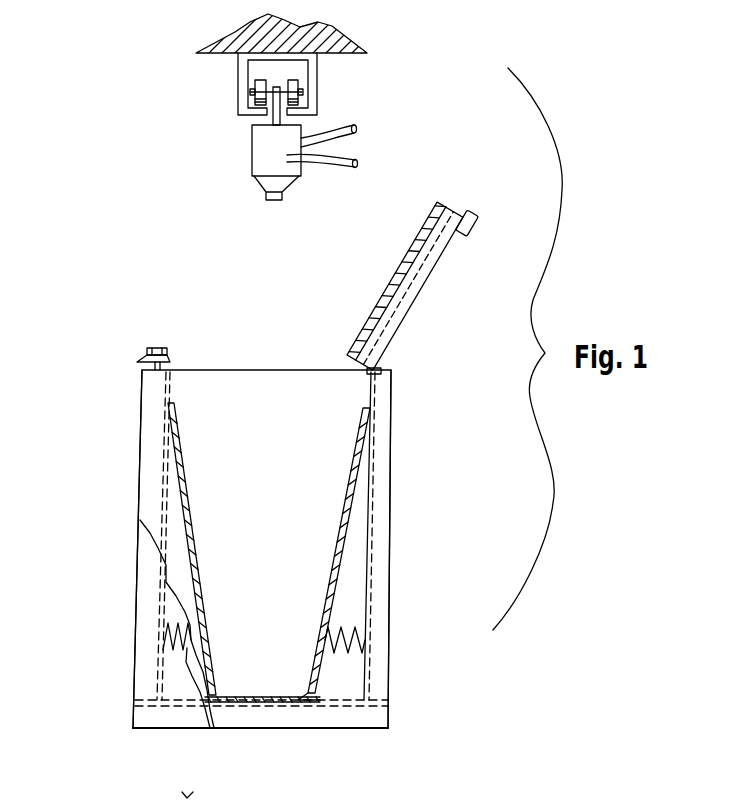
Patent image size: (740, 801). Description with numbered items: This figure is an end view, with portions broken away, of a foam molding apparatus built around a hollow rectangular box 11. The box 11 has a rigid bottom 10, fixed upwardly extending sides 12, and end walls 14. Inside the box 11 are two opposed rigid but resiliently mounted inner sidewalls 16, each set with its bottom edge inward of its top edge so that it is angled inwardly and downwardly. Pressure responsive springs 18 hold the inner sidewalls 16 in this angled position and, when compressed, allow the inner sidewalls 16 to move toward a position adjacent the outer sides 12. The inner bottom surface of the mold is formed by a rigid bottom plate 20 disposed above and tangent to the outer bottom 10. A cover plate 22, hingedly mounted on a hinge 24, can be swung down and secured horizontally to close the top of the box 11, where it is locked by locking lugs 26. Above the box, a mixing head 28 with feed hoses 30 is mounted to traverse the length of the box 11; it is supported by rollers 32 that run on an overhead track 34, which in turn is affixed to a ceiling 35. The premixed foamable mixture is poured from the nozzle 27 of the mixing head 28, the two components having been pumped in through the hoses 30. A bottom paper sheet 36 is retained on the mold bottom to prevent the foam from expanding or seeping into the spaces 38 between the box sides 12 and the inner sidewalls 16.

The rigid bottom 10 is at (272, 723).
The hollow rectangular box 11 is at (446, 491).
The sides 12 is at (142, 670).
The end walls 14 is at (178, 683).
The inner sidewalls 16 is at (196, 572).
The pressure responsive springs 18 is at (190, 623).
The rigid bottom plate 20 is at (225, 703).
The cover plate 22 is at (402, 270).
The hinge 24 is at (385, 372).
The locking lugs 26 is at (140, 355).
The nozzle 27 is at (270, 197).
The mixing head 28 is at (252, 148).
The feed hoses 30 is at (360, 165).
The rollers 32 is at (257, 84).
The overhead track 34 is at (313, 78).
The ceiling 35 is at (335, 43).
The bottom paper sheet 36 is at (292, 698).
The spaces 38 is at (173, 549).